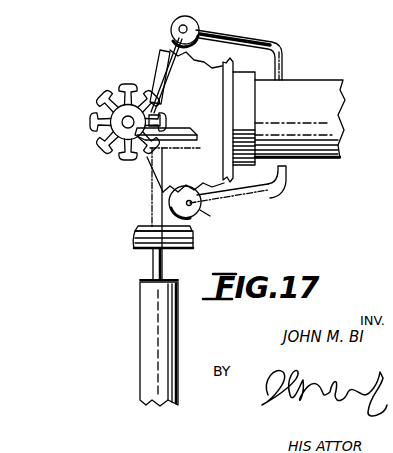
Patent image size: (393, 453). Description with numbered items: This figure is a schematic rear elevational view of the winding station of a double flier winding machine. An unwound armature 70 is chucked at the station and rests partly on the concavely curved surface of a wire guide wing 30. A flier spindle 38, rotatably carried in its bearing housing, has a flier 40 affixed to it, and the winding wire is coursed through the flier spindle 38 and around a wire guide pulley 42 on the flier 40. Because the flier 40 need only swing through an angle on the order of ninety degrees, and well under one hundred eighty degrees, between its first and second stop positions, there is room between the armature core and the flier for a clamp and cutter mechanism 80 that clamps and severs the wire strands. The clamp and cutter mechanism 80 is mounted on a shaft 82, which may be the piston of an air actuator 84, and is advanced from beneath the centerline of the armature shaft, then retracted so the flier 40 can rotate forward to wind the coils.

The wire guide wing 30 is at (160, 60).
The flier spindle 38 is at (303, 87).
The flier 40 is at (227, 34).
The wire guide pulley 42 is at (172, 27).
The unwound armature 70 is at (76, 137).
The clamp and cutter mechanism 80 is at (135, 232).
The shaft 82 is at (152, 262).
The air actuator 84 is at (152, 322).